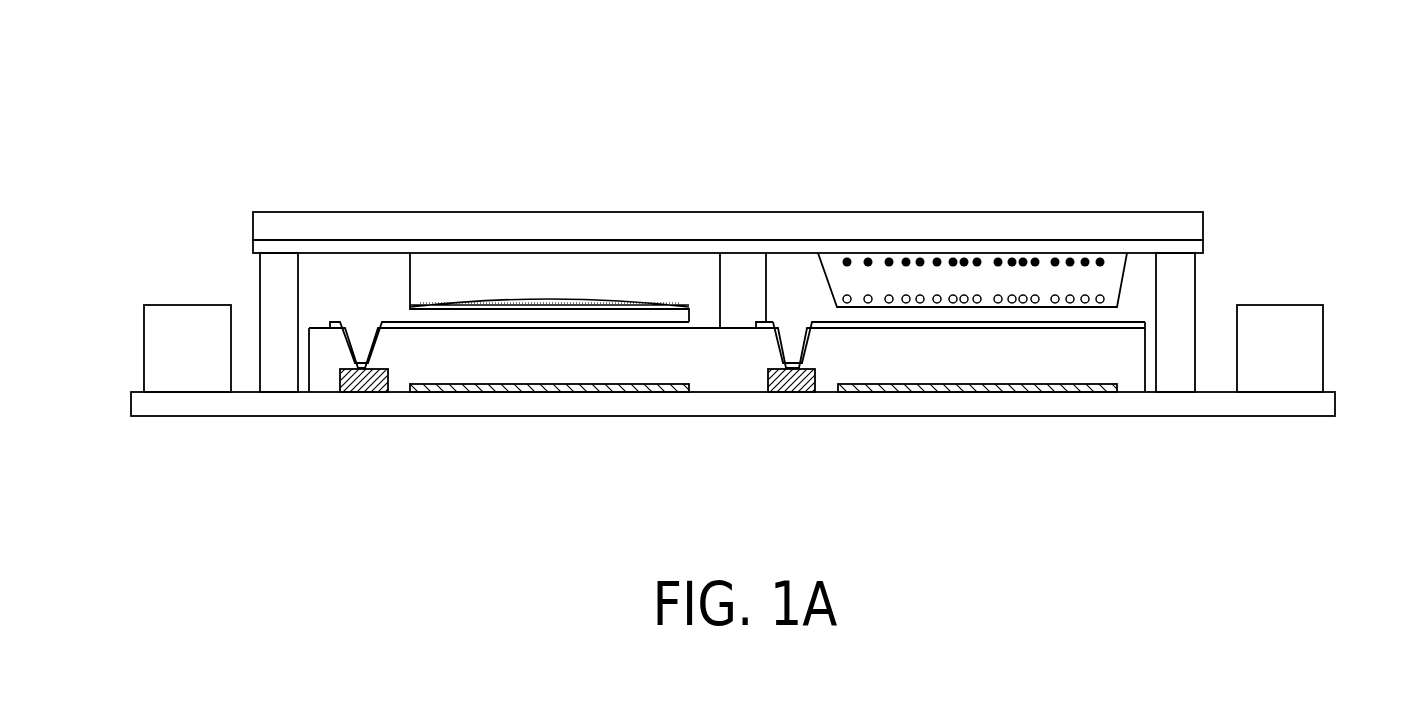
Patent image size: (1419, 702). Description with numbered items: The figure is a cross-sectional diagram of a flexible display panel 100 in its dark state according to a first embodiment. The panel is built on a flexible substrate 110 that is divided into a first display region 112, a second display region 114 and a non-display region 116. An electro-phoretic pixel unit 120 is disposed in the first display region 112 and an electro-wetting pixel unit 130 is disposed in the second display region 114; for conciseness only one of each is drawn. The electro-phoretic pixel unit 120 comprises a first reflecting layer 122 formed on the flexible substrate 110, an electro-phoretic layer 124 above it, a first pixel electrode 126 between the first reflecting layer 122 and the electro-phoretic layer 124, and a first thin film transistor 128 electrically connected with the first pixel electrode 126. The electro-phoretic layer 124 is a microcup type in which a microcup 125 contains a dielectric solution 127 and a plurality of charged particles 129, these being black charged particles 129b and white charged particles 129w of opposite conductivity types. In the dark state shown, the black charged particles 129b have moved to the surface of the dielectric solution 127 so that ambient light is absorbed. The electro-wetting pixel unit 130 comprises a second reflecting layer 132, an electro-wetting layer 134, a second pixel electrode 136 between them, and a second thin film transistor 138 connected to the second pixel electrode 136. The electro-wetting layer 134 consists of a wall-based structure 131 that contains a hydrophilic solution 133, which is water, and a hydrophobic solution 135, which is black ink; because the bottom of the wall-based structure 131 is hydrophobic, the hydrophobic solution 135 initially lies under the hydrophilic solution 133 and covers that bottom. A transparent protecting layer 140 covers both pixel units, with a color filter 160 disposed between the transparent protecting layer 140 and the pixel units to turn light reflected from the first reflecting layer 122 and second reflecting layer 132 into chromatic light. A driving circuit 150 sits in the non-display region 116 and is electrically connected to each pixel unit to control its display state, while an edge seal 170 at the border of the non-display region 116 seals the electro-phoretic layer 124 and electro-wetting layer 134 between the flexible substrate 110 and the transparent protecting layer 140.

The flexible display panel 100 is at (1327, 535).
The flexible substrate 110 is at (1330, 403).
The first display region 112 is at (748, 427).
The second display region 114 is at (738, 427).
The non-display region 116 is at (132, 427).
The electro-phoretic pixel unit 120 is at (1268, 62).
The first reflecting layer 122 is at (1045, 383).
The electro-phoretic layer 124 is at (1003, 115).
The microcup 125 is at (798, 267).
The first pixel electrode 126 is at (1117, 323).
The dielectric solution 127 is at (883, 278).
The first thin film transistor 128 is at (767, 370).
The charged particles 129 is at (1042, 167).
The white charged particles 129w is at (937, 300).
The black charged particles 129b is at (1013, 262).
The electro-wetting pixel unit 130 is at (273, 62).
The wall-based structure 131 is at (713, 260).
The second reflecting layer 132 is at (453, 383).
The hydrophilic solution 133 is at (605, 262).
The electro-wetting layer 134 is at (495, 115).
The hydrophobic solution 135 is at (545, 298).
The second pixel electrode 136 is at (385, 328).
The second thin film transistor 138 is at (353, 367).
The transparent protecting layer 140 is at (1198, 222).
The driving circuit 150 is at (152, 350).
The color filter 160 is at (1203, 243).
The edge seal 170 is at (1187, 282).